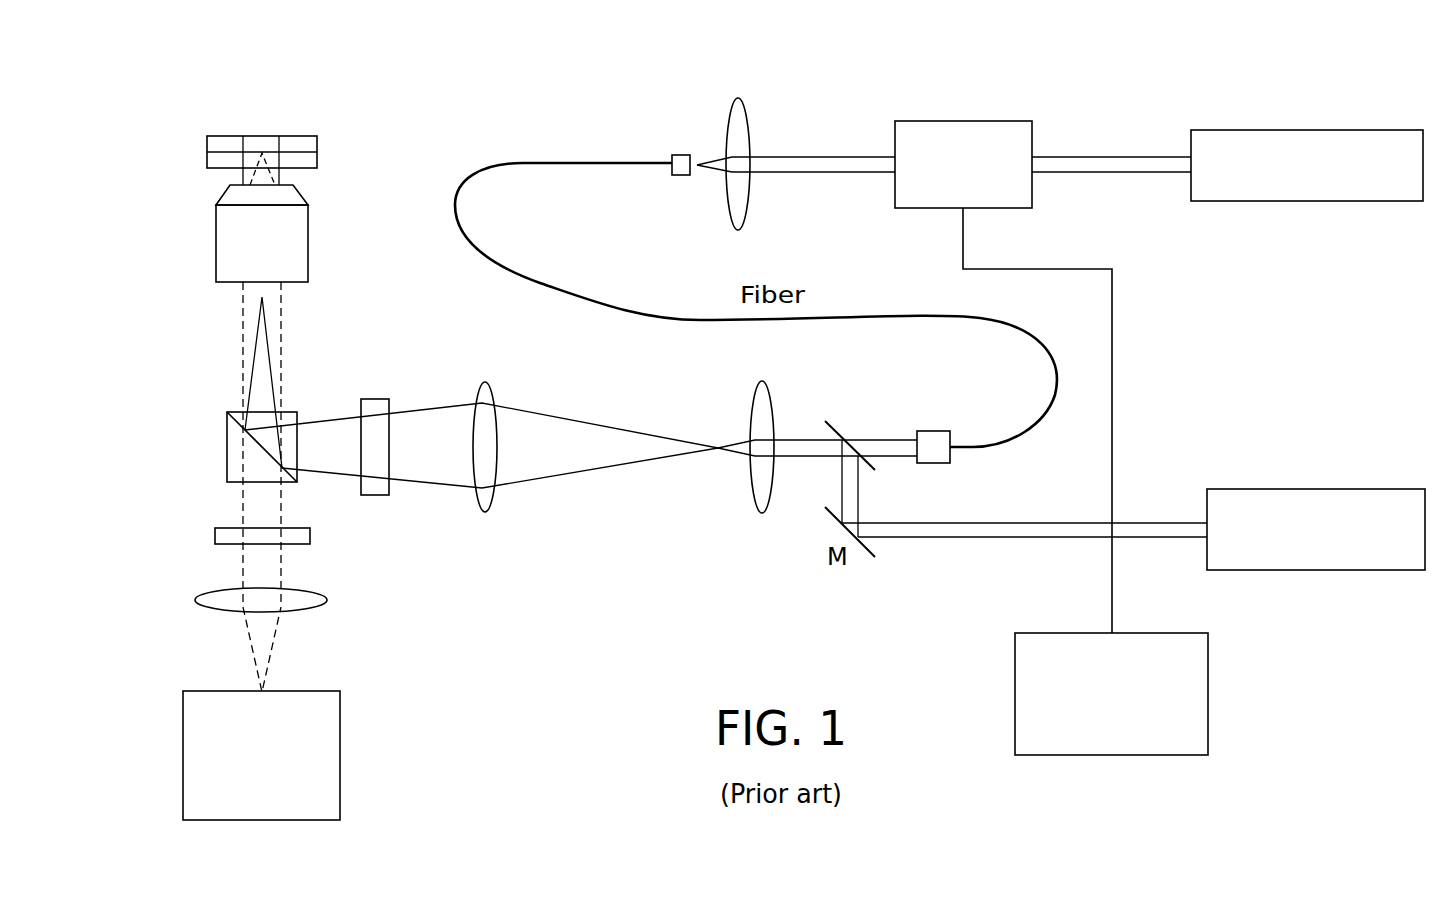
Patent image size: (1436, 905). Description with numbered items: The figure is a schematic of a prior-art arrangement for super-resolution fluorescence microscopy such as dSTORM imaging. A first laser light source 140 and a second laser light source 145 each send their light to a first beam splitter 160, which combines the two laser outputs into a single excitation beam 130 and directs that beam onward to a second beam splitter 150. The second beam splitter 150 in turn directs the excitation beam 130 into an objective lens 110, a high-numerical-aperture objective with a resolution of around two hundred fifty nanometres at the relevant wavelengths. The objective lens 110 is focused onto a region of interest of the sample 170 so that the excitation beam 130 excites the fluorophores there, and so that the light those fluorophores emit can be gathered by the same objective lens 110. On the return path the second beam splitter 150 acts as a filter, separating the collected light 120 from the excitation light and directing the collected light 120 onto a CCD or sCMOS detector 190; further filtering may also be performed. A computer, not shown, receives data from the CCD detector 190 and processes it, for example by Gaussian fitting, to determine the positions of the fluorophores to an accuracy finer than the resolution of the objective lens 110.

The objective lens 110 is at (216, 240).
The collected light 120 is at (243, 500).
The excitation beam 130 is at (345, 418).
The first laser light source 140 is at (1277, 130).
The second laser light source 145 is at (1280, 489).
The second beam splitter 150 is at (227, 440).
The first beam splitter 160 is at (851, 432).
The sample 170 is at (237, 136).
The CCD detector 190 is at (340, 735).